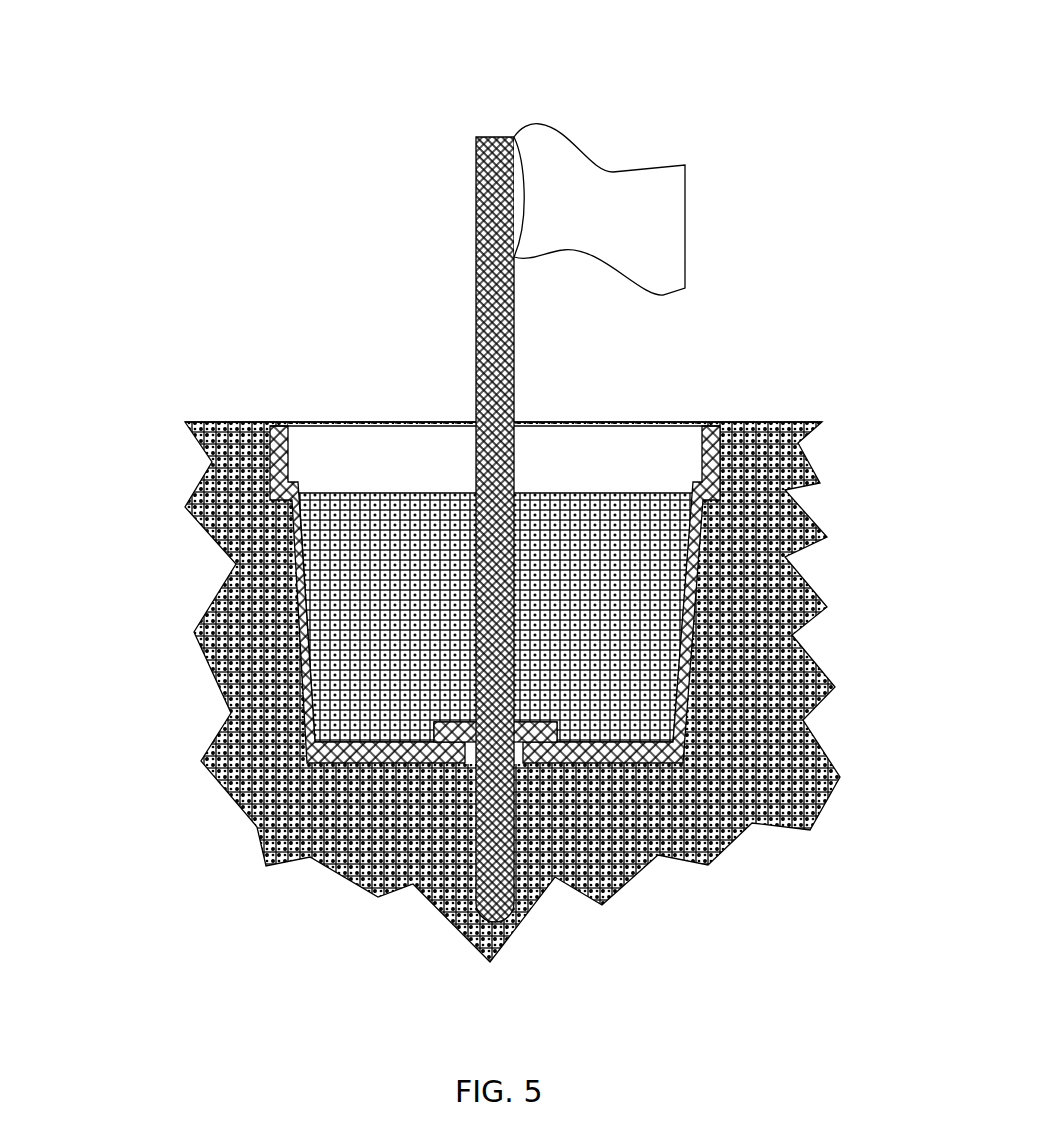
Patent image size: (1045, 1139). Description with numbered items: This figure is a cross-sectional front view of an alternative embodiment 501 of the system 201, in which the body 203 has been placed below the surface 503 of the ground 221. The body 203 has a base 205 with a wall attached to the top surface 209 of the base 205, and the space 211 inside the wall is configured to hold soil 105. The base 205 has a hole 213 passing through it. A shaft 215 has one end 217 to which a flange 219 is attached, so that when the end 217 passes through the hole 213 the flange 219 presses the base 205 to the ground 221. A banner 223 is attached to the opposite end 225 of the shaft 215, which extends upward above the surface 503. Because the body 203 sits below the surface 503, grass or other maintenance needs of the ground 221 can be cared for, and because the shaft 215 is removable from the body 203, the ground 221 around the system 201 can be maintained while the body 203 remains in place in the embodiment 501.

The embodiment 501 is at (134, 46).
The surface 503 is at (794, 418).
The ground 221 is at (205, 422).
The soil 105 is at (345, 493).
The system 201 is at (304, 155).
The opposite end 225 is at (453, 153).
The shaft 215 is at (475, 282).
The end 217 is at (469, 897).
The banner 223 is at (573, 145).
The space 211 is at (677, 422).
The body 203 is at (281, 547).
The top surface 209 is at (336, 739).
The base 205 is at (650, 764).
The hole 213 is at (518, 764).
The flange 219 is at (557, 722).